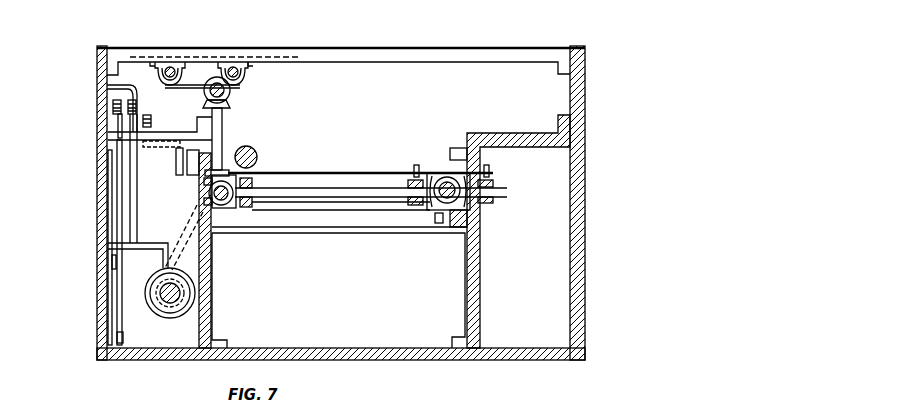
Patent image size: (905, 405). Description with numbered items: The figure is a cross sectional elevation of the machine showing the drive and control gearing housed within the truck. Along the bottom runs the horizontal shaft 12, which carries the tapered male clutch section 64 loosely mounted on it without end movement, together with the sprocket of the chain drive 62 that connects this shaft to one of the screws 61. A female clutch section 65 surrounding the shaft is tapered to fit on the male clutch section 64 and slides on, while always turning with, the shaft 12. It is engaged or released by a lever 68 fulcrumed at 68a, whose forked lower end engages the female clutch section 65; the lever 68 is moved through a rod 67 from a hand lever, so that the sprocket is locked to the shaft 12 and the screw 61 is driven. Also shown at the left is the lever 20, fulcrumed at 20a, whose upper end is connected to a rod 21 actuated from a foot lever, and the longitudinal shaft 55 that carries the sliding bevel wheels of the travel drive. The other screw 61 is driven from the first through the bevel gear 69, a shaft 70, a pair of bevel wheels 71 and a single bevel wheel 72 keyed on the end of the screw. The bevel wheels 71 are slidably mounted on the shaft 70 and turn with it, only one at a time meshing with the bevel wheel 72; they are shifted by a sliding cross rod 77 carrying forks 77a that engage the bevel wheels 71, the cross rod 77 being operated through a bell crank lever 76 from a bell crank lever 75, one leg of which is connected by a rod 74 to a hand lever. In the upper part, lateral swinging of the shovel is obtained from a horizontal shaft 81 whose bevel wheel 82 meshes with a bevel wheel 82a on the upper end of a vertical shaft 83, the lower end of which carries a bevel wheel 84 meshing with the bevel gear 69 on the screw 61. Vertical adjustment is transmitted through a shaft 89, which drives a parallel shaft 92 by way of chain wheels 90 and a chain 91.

The horizontal shaft 12 is at (213, 304).
The lever 20 is at (115, 308).
The fulcrum 20a is at (112, 268).
The rod 21 is at (108, 105).
The shaft 55 is at (258, 157).
The screw 61 is at (240, 222).
The chain drive 62 is at (213, 290).
The male clutch section 64 is at (176, 312).
The female clutch section 65 is at (156, 312).
The rod 67 is at (105, 80).
The lever 68 is at (130, 199).
The fulcrum 68a is at (160, 257).
The bevel gear 69 is at (195, 195).
The shaft 70 is at (305, 187).
The bevel wheels 71 is at (478, 203).
The bevel wheel 72 is at (445, 175).
The rod 74 is at (145, 120).
The bell crank lever 75 is at (152, 130).
The bell crank lever 76 is at (176, 158).
The sliding cross rod 77 is at (348, 172).
The forks 77a is at (412, 170).
The horizontal shaft 81 is at (240, 92).
The bevel wheel 82 is at (245, 84).
The bevel wheel 82a is at (243, 105).
The vertical shaft 83 is at (223, 128).
The bevel wheel 84 is at (233, 150).
The shaft 89 is at (170, 66).
The chain wheels 90 is at (157, 75).
The chain 91 is at (195, 83).
The shaft 92 is at (234, 67).